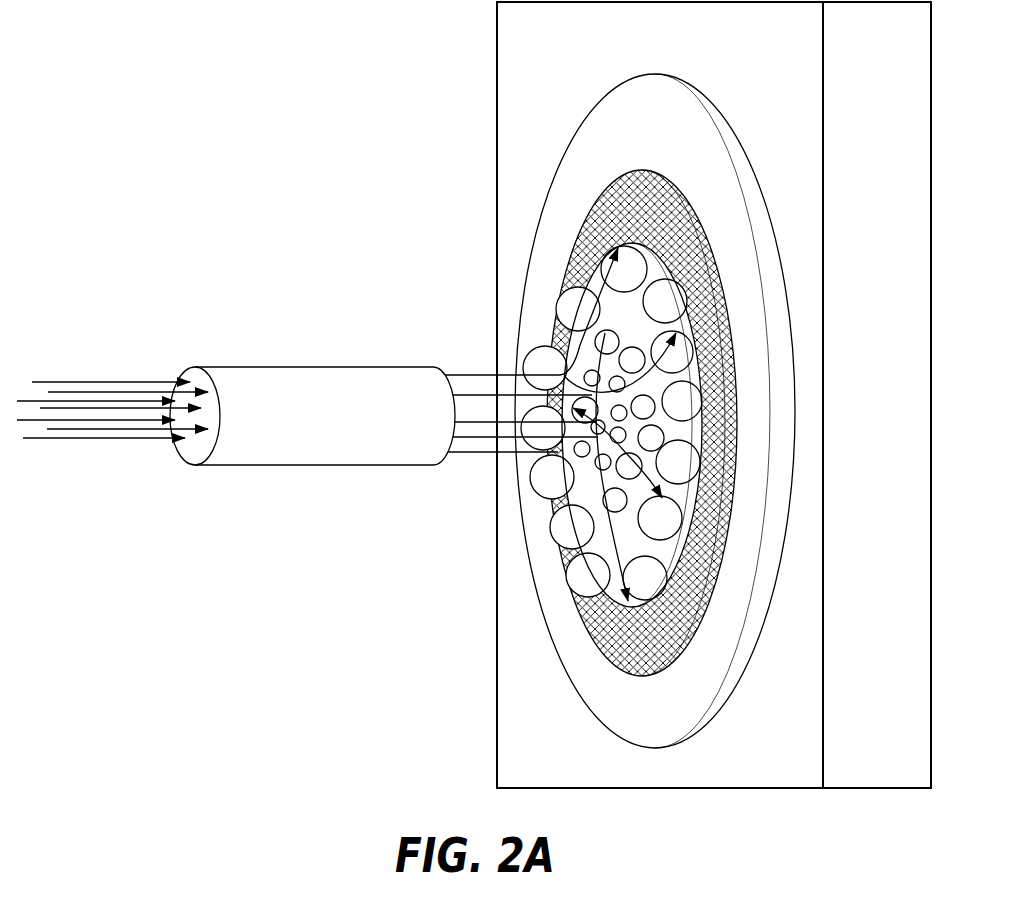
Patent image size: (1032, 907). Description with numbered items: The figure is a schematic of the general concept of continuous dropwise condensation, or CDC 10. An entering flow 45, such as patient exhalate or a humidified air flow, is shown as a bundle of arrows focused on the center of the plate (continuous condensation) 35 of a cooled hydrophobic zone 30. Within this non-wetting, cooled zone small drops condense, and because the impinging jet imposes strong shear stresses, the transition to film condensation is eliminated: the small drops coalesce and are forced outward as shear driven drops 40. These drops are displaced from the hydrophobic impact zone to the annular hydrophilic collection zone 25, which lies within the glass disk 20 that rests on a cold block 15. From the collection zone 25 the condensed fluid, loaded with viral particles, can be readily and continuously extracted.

The continuous dropwise condensation (CDC) concept 10 is at (150, 78).
The cold block 15 is at (531, 48).
The glass disk 20 is at (596, 127).
The collection zone 25 is at (596, 229).
The cooled hydrophobic zone 30 is at (621, 316).
The plate (continuous condensation) 35 is at (589, 466).
The shear driven drops 40 is at (636, 530).
The entering flow 45 is at (158, 455).